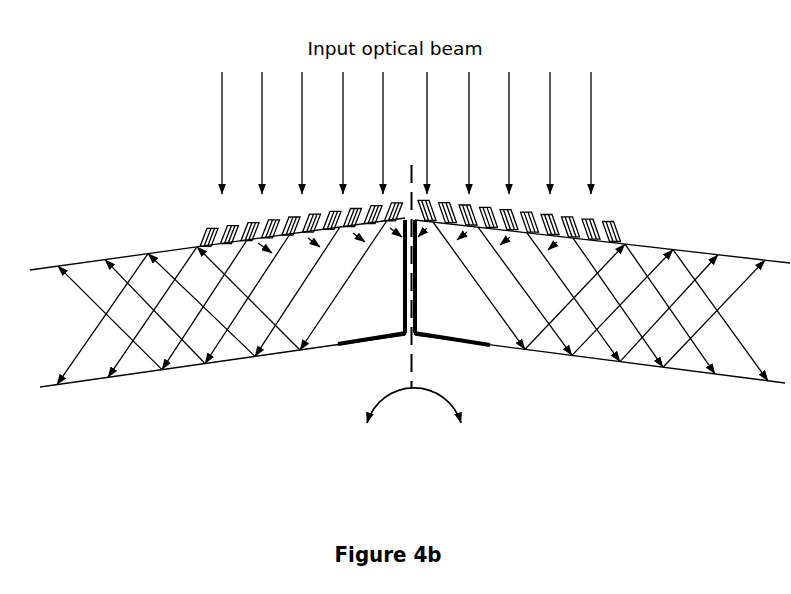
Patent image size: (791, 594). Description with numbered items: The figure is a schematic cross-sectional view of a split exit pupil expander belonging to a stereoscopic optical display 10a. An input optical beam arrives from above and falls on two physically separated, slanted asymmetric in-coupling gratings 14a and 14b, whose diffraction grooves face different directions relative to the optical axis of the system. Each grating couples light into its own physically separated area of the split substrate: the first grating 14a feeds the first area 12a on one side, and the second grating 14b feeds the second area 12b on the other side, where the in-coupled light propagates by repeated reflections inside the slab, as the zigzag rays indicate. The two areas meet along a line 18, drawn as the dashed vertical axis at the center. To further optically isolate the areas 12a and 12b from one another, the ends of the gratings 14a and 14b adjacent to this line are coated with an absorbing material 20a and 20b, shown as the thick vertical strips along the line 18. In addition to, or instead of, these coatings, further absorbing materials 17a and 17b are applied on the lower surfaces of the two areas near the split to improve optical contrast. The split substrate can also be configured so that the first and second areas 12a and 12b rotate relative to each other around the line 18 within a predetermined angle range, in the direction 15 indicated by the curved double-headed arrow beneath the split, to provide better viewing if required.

The stereoscopic optical display 10a is at (655, 132).
The first area of the split exit pupil expander 12a is at (188, 365).
The second area of the split exit pupil expander 12b is at (675, 367).
The first slanted asymmetric in-coupling grating 14a is at (230, 232).
The second slanted asymmetric in-coupling grating 14b is at (567, 217).
The rotation direction 15 is at (400, 392).
The absorbing material 17a is at (370, 343).
The absorbing material 17b is at (473, 347).
The line 18 is at (413, 367).
The absorbing material 20a is at (402, 288).
The absorbing material 20b is at (421, 285).